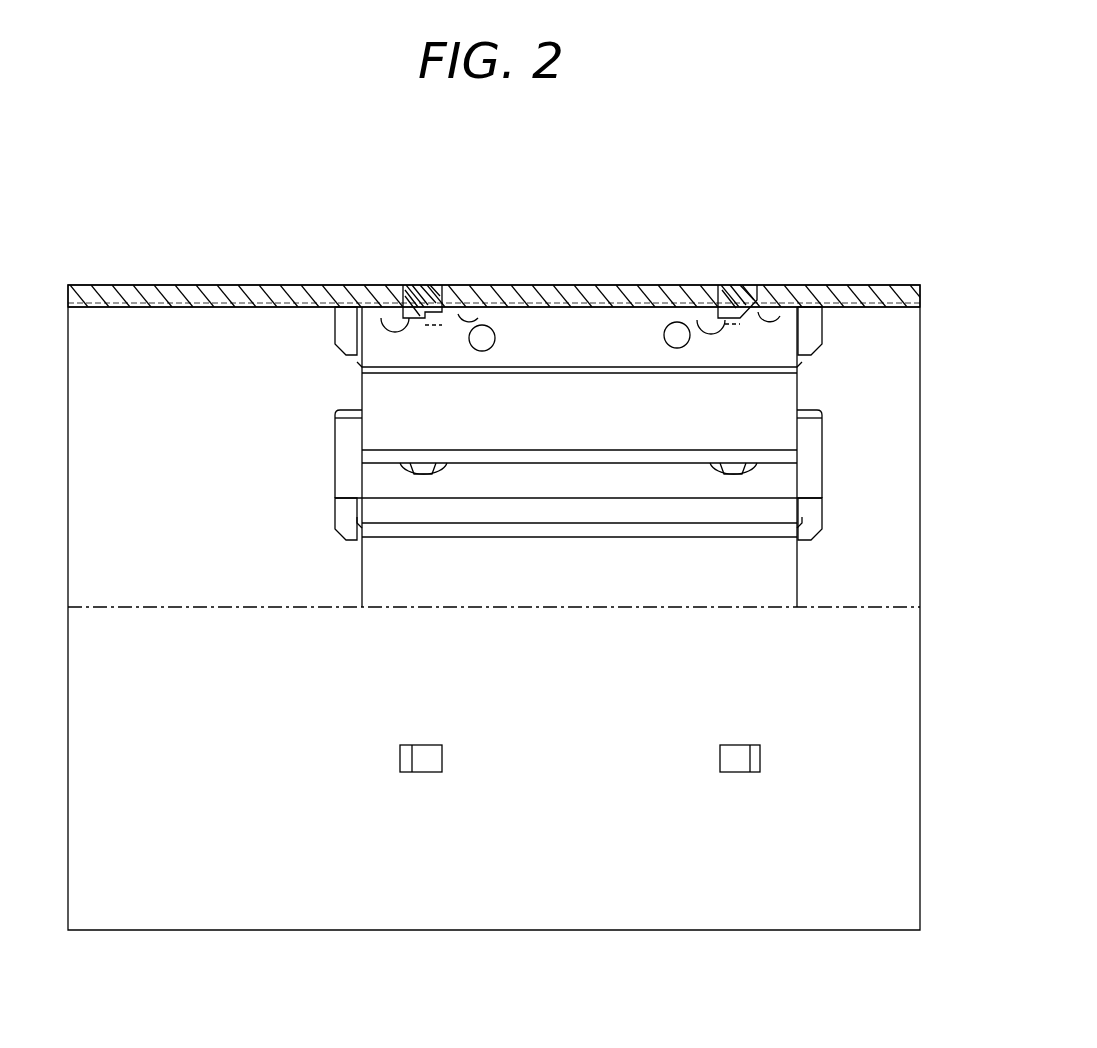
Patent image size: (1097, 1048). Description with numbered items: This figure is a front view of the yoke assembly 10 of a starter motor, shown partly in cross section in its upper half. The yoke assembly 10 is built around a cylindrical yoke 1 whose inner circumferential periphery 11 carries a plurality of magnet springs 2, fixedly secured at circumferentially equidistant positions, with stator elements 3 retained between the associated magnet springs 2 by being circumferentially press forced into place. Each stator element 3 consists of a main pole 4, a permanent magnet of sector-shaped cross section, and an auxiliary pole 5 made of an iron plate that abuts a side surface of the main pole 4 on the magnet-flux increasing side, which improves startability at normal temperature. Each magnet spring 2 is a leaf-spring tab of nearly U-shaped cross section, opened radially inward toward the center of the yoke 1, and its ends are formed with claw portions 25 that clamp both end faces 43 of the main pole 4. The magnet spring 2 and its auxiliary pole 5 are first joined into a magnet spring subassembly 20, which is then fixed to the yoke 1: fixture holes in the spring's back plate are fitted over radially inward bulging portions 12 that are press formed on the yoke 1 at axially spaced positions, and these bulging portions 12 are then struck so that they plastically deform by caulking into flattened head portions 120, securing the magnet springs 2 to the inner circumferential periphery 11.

The cylindrical yoke 1 is at (548, 290).
The magnet spring 2 is at (836, 321).
The stator element 3 is at (350, 369).
The main pole 4 is at (365, 432).
The auxiliary pole 5 is at (798, 370).
The yoke assembly 10 is at (738, 248).
The inner circumferential periphery 11 is at (875, 305).
The bulging portion 12 is at (398, 318).
The magnet spring subassembly 20 is at (322, 328).
The claw portion 25 is at (335, 410).
The end face 43 is at (345, 440).
The flattened head portion 120 is at (460, 318).